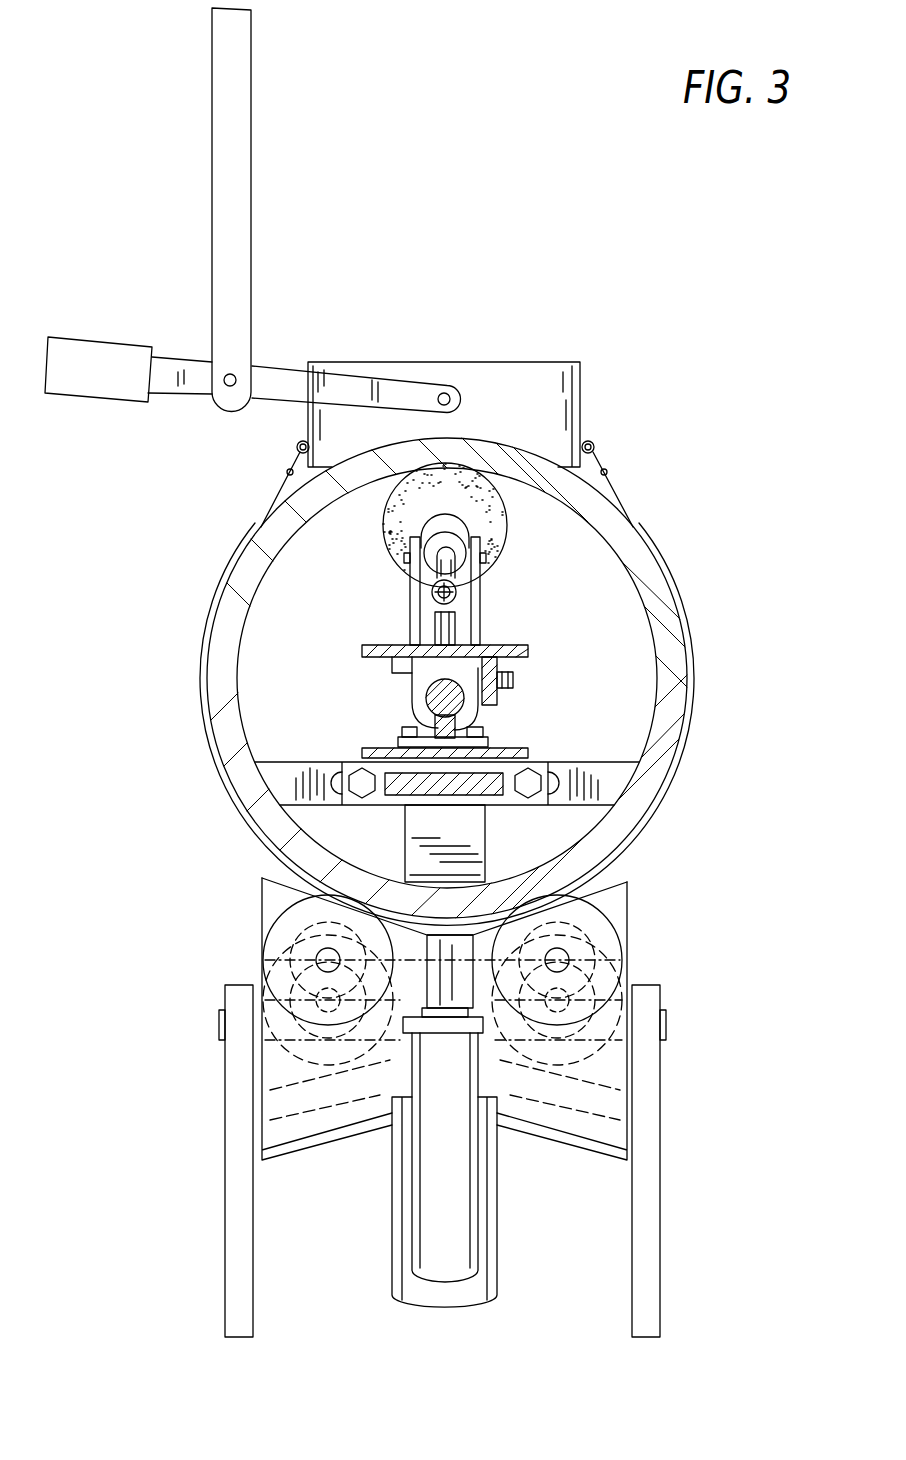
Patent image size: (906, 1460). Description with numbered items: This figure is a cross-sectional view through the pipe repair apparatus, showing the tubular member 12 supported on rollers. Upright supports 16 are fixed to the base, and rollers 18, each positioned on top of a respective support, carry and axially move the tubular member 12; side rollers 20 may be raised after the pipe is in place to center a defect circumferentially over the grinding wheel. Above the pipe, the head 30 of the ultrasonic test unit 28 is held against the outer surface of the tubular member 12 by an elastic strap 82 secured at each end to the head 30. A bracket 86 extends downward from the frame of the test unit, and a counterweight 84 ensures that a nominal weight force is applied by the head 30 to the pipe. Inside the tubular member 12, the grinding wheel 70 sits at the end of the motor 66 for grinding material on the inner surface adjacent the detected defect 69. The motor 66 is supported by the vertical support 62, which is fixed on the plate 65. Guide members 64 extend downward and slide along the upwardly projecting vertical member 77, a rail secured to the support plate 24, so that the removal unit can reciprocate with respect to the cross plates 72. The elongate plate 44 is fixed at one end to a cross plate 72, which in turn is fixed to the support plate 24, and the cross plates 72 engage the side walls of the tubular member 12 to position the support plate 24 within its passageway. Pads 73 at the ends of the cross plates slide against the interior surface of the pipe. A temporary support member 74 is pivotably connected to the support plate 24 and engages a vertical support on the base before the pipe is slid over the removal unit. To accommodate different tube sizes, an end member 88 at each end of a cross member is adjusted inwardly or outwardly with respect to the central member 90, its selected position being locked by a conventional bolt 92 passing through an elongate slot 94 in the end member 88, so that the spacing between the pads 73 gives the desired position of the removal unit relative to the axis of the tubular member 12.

The tubular member 12 is at (230, 727).
The upright support 16 is at (497, 1275).
The rollers 18 is at (628, 905).
The side rollers 20 is at (598, 949).
The support plate 24 is at (530, 753).
The ultrasonic test unit 28 is at (396, 197).
The head 30 is at (528, 362).
The elongate plate 44 is at (397, 795).
The vertical support 62 is at (482, 622).
The guide members 64 is at (455, 668).
The plate 65 is at (530, 648).
The motor 66 is at (462, 523).
The detected defect 69 is at (448, 465).
The grinding wheel 70 is at (382, 538).
The cross plate 72 is at (585, 768).
The pads 73 is at (606, 790).
The temporary support member 74 is at (485, 840).
The vertical member 77 is at (456, 722).
The elastic strap 82 is at (608, 490).
The counterweight 84 is at (96, 350).
The bracket 86 is at (255, 140).
The end member 88 is at (275, 768).
The central member 90 is at (347, 762).
The bolt 92 is at (357, 797).
The elongate slot 94 is at (333, 786).